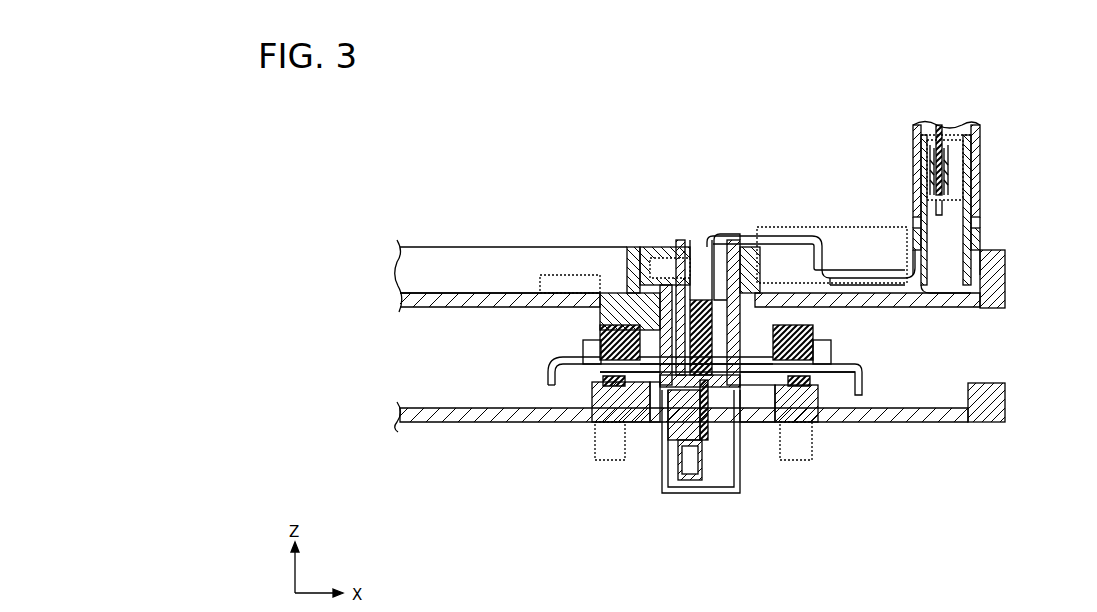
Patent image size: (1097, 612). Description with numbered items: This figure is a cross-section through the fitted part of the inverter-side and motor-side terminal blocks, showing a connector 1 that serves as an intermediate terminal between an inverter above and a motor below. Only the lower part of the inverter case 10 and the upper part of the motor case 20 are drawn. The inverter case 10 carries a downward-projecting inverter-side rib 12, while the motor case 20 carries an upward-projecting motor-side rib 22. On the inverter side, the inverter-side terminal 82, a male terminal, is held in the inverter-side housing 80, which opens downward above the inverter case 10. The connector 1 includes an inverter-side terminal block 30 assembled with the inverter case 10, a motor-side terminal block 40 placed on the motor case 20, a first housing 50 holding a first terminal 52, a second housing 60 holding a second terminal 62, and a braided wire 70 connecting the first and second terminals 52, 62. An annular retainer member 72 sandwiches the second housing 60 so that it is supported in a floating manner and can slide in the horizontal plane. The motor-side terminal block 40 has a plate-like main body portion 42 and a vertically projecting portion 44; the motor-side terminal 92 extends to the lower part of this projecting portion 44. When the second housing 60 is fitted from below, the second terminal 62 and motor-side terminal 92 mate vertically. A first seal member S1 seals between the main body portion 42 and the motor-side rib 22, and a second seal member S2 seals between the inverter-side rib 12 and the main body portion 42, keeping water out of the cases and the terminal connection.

The connector 1 is at (760, 190).
The inverter case 10 is at (1007, 268).
The inverter-side rib 12 is at (612, 318).
The motor case 20 is at (1007, 403).
The motor-side rib 22 is at (612, 410).
The inverter-side terminal block 30 is at (985, 293).
The motor-side terminal block 40 is at (862, 375).
The main body portion 42 is at (560, 362).
The projecting portion 44 is at (662, 442).
The first housing 50 is at (968, 197).
The first terminal 52 is at (955, 158).
The second housing 60 is at (735, 262).
The second terminal 62 is at (683, 262).
The braided wire 70 is at (843, 278).
The retainer member 72 is at (660, 265).
The inverter-side housing 80 is at (913, 185).
The inverter-side terminal 82 is at (938, 140).
The motor-side terminal 92 is at (705, 392).
The first seal member S1 is at (800, 380).
The second seal member S2 is at (815, 345).